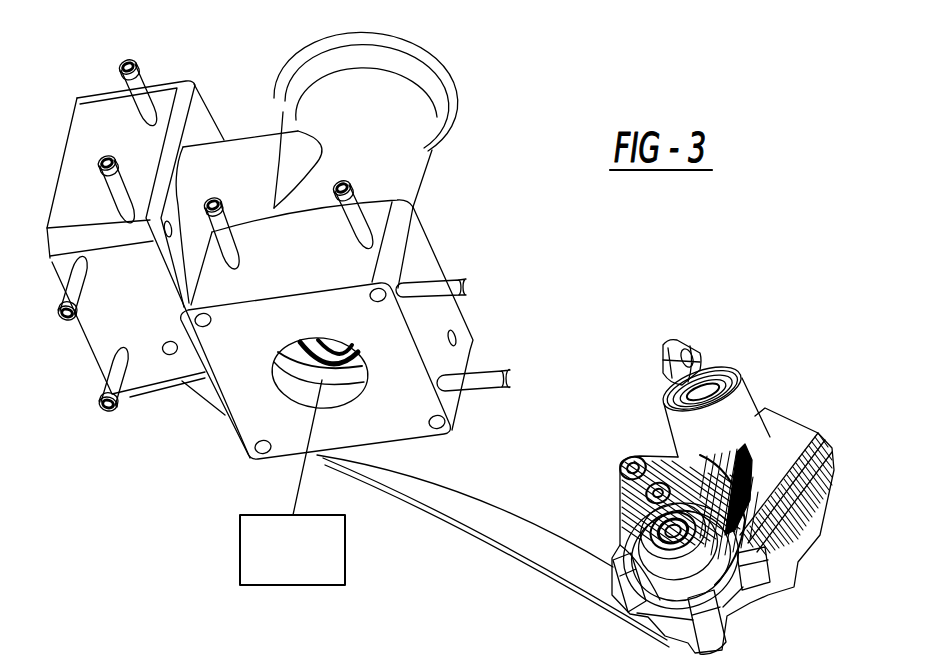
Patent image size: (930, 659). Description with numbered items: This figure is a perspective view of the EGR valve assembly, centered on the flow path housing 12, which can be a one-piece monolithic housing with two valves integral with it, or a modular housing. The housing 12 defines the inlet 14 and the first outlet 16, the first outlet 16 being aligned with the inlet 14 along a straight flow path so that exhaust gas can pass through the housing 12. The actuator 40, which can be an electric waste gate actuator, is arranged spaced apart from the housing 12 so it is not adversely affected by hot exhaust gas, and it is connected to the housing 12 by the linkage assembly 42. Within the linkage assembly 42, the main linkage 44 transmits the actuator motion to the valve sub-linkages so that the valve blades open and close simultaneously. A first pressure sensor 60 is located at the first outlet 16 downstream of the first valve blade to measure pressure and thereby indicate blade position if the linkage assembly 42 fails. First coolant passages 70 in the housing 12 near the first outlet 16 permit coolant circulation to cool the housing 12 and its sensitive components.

The flow path housing 12 is at (253, 49).
The inlet 14 is at (437, 66).
The first outlet 16 is at (343, 393).
The actuator 40 is at (752, 352).
The linkage assembly 42 is at (479, 541).
The main linkage 44 is at (563, 562).
The first pressure sensor 60 is at (240, 543).
The first coolant passages 70 is at (255, 455).